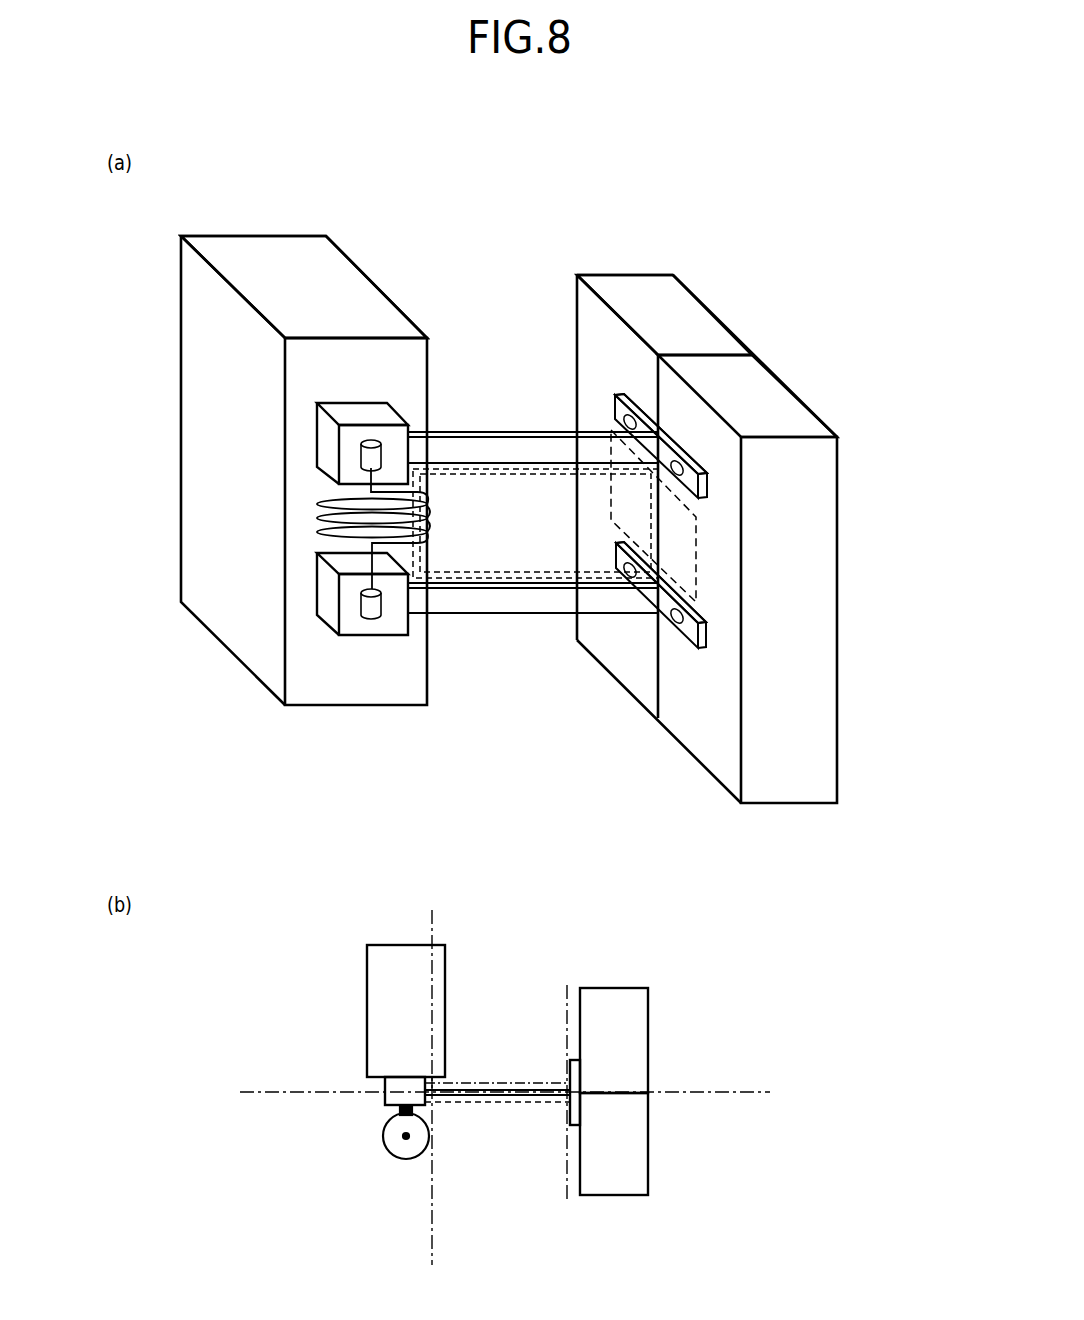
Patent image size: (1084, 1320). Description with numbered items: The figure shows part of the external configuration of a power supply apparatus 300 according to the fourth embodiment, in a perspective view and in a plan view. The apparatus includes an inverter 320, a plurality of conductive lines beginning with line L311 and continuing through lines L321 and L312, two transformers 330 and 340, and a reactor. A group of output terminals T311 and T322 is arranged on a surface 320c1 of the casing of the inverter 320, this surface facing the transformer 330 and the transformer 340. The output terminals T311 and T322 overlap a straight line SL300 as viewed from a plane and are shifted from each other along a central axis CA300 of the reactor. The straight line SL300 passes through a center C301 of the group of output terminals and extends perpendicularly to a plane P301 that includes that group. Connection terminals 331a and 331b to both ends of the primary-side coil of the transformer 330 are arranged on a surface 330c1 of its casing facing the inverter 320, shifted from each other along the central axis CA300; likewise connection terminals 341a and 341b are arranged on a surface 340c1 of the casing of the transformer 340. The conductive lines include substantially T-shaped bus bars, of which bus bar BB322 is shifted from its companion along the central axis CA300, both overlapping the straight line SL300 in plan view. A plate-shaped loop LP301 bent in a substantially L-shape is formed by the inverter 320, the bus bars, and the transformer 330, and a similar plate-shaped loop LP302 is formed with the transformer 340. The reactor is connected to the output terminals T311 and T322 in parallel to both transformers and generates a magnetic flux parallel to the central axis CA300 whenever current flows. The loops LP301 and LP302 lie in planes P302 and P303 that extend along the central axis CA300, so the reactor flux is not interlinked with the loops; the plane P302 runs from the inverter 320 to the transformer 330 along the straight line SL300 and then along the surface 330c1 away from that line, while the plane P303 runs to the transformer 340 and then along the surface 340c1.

The power supply apparatus 300 is at (538, 450).
The inverter 320 is at (304, 405).
The surface of the inverter casing 320c1 is at (436, 1081).
The transformer 330 is at (707, 472).
The surface of the transformer casing 330c1 is at (577, 1008).
The connection terminal 331a is at (634, 390).
The connection terminal 331b is at (635, 540).
The transformer 340 is at (770, 543).
The surface of the transformer casing 340c1 is at (577, 1180).
The connection terminal 341a is at (693, 441).
The connection terminal 341b is at (692, 600).
The output terminal T311 is at (410, 421).
The output terminal T322 is at (418, 628).
The bus bar BB322 is at (533, 674).
The conductive line L311 is at (533, 360).
The conductive line L321 is at (551, 433).
The conductive line L312 is at (533, 689).
The plate-shaped loop LP301 is at (481, 470).
The plate-shaped loop LP302 is at (543, 571).
The plane P301 is at (434, 918).
The plane P302 is at (482, 1078).
The plane P303 is at (565, 1138).
The straight line SL300 is at (743, 1088).
The central axis CA300 is at (396, 1129).
The center C301 is at (438, 1098).